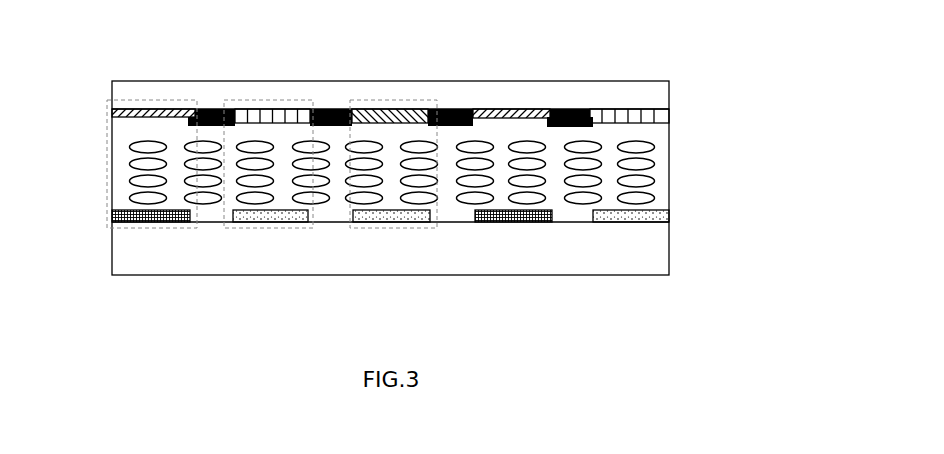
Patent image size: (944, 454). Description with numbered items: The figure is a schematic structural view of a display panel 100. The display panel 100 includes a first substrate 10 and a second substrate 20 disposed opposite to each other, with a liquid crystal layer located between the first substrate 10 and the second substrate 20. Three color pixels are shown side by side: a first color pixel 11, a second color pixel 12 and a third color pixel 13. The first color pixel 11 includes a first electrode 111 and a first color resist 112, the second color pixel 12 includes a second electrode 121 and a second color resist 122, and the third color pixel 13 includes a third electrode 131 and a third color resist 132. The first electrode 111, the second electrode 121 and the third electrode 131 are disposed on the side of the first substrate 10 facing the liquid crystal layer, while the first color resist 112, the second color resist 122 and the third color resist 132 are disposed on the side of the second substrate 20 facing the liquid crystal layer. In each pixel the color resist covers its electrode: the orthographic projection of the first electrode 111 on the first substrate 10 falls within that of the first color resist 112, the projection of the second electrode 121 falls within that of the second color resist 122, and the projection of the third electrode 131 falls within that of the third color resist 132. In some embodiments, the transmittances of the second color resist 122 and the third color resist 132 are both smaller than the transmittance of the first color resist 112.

The display panel 100 is at (393, 330).
The first substrate 10 is at (670, 260).
The second substrate 20 is at (670, 97).
The first color pixel 11 is at (109, 150).
The first electrode 111 is at (132, 220).
The first color resist 112 is at (145, 116).
The second color pixel 12 is at (310, 100).
The second electrode 121 is at (265, 220).
The second color resist 122 is at (263, 117).
The third color pixel 13 is at (433, 100).
The third electrode 131 is at (380, 220).
The third color resist 132 is at (380, 117).